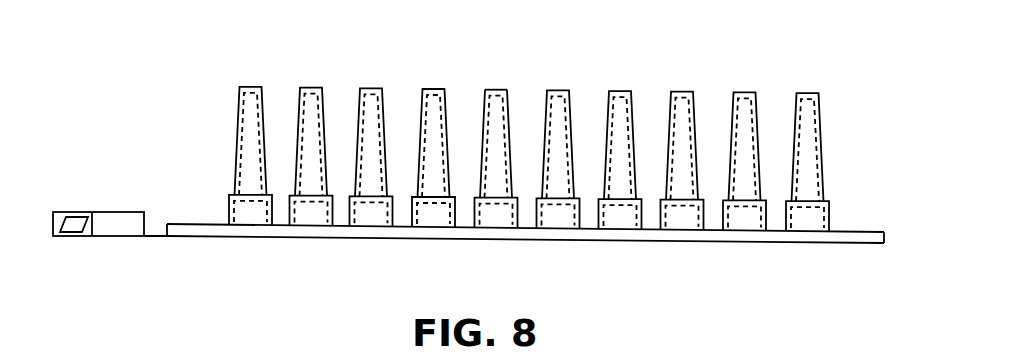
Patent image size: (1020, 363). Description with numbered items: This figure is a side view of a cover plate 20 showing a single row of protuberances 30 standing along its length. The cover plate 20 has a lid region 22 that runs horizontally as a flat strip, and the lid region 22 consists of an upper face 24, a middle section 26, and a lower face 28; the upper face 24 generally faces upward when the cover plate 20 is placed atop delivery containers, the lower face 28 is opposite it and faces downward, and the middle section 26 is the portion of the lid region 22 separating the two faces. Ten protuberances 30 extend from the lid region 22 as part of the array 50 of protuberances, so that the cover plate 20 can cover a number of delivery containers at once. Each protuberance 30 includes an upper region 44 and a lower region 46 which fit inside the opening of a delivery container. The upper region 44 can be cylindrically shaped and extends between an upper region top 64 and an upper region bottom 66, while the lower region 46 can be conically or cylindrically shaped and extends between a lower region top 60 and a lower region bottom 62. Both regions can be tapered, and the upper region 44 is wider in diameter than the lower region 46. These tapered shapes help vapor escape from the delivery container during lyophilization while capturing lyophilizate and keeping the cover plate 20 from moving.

The cover plate 20 is at (747, 60).
The lid region 22 is at (167, 236).
The upper face 24 is at (228, 238).
The middle section 26 is at (885, 234).
The lower face 28 is at (403, 227).
The protuberance 30 is at (822, 142).
The upper region 44 is at (229, 212).
The lower region 46 is at (250, 86).
The contact array 50 is at (683, 269).
The lower region top 60 is at (485, 140).
The lower region bottom 62 is at (507, 90).
The upper region top 64 is at (544, 232).
The upper region bottom 66 is at (602, 240).